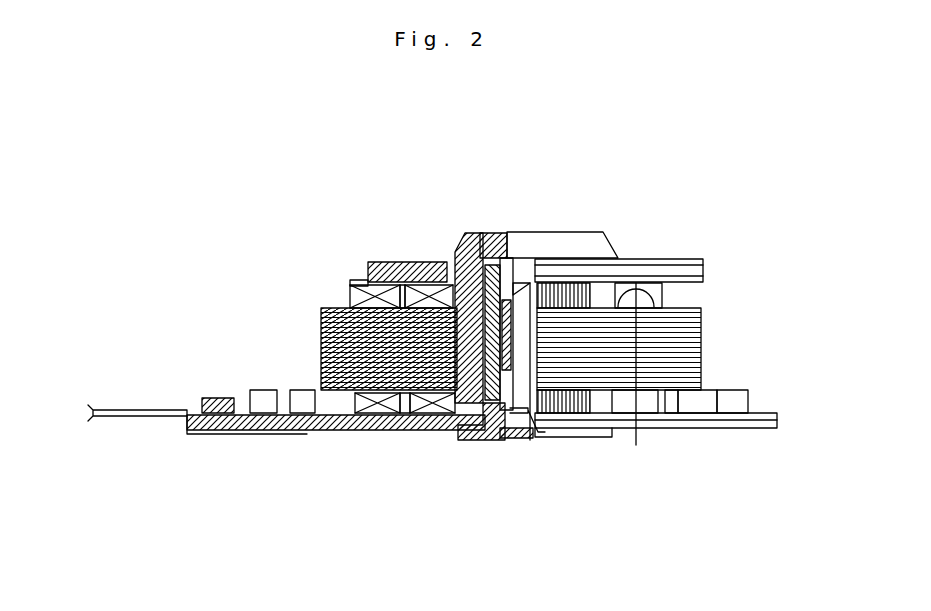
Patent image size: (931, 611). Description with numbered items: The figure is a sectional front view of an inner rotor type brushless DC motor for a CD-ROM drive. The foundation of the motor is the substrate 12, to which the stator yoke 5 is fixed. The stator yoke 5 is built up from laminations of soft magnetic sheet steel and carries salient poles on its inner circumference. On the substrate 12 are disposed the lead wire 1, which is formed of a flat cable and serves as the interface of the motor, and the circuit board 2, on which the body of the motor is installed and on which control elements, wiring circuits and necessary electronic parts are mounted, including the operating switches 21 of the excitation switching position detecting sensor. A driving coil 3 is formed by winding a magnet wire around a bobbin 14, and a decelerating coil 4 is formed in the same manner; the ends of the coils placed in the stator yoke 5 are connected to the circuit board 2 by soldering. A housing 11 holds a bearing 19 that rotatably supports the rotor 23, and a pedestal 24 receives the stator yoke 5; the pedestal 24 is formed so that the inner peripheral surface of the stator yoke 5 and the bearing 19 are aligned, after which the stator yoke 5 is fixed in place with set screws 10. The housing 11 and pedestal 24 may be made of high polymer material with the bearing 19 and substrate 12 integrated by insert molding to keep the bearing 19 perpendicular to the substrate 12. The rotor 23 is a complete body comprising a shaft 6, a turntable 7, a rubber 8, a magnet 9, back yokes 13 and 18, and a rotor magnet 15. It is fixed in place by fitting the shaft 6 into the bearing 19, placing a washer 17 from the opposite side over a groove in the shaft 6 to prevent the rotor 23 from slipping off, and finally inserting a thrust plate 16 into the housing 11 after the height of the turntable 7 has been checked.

The lead wire 1 is at (130, 412).
The circuit board 2 is at (247, 422).
The driving coil 3 is at (382, 414).
The decelerating coil 4 is at (430, 414).
The stator yoke 5 is at (378, 350).
The shaft 6 is at (530, 285).
The turntable 7 is at (460, 245).
The rubber 8 is at (380, 262).
The magnet 9 is at (488, 240).
The set screws 10 is at (657, 293).
The housing 11 is at (484, 440).
The substrate 12 is at (202, 430).
The back yoke 13 is at (362, 278).
The bobbin 14 is at (407, 414).
The rotor magnet 15 is at (428, 262).
The thrust plate 16 is at (520, 440).
The washer 17 is at (537, 433).
The back yoke 18 is at (508, 258).
The bearing 19 is at (517, 288).
The operating switches 21 is at (300, 398).
The rotor 23 is at (565, 157).
The pedestal 24 is at (636, 400).